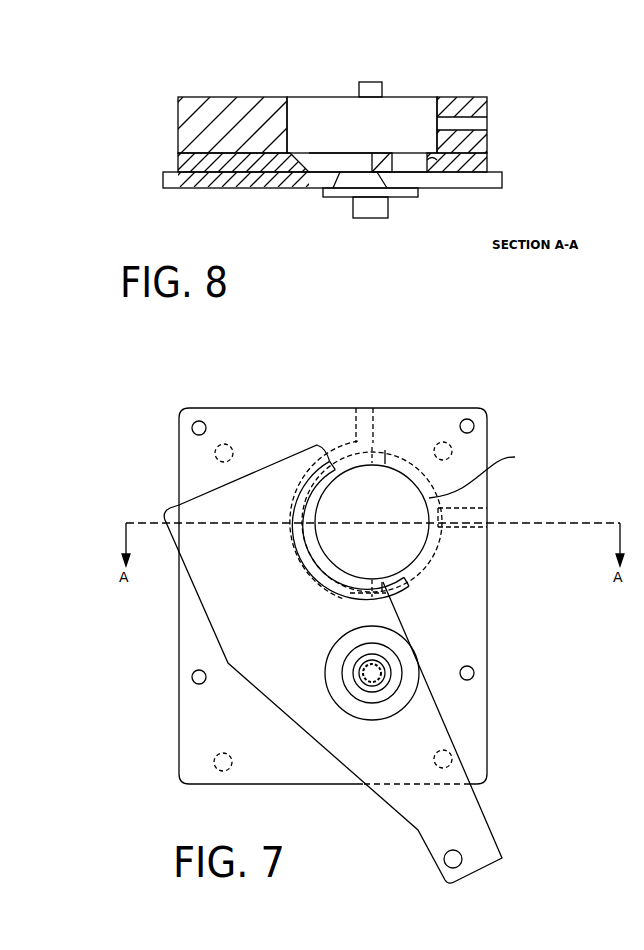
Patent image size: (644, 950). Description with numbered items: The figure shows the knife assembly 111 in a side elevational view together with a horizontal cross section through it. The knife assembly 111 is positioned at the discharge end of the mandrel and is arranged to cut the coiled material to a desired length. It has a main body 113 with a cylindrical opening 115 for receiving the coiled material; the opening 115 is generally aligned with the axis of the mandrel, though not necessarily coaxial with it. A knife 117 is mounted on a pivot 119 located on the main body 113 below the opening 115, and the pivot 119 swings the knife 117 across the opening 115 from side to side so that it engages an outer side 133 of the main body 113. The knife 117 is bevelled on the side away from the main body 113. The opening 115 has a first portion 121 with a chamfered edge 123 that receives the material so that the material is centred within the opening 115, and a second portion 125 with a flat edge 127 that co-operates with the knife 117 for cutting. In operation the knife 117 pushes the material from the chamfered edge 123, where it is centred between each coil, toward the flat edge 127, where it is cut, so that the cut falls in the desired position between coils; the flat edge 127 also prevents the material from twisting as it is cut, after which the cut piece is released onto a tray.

In FIG. 7, the knife assembly 111 is at (373, 585).
In FIG. 8, the main body 113 is at (260, 108).
In FIG. 7, the main body 113 is at (478, 500).
In FIG. 8, the cylindrical opening 115 is at (345, 108).
In FIG. 7, the cylindrical opening 115 is at (412, 548).
In FIG. 8, the knife 117 is at (245, 185).
In FIG. 7, the knife 117 is at (243, 613).
In FIG. 7, the pivot 119 is at (374, 675).
In FIG. 7, the first portion 121 is at (317, 511).
In FIG. 8, the chamfered edge 123 is at (338, 174).
In FIG. 7, the chamfered edge 123 is at (345, 460).
In FIG. 7, the second portion 125 is at (493, 475).
In FIG. 8, the flat edge 127 is at (432, 163).
In FIG. 7, the flat edge 127 is at (404, 556).
In FIG. 7, the outer side 133 is at (429, 527).